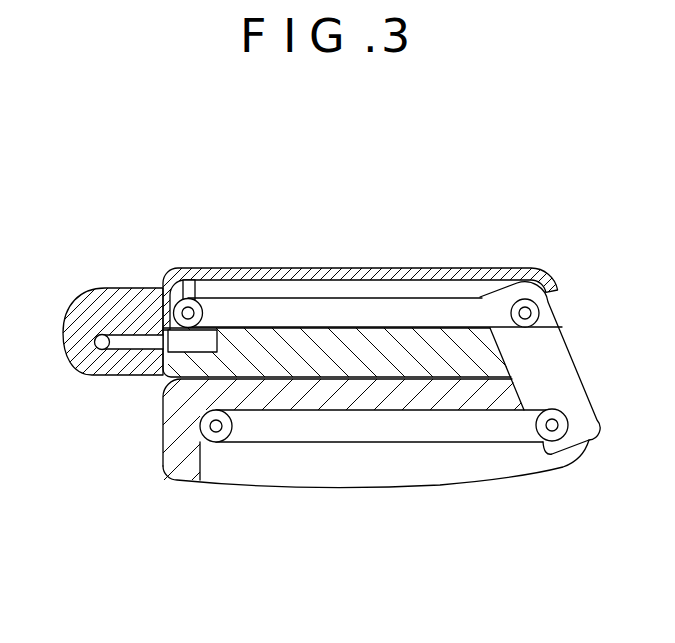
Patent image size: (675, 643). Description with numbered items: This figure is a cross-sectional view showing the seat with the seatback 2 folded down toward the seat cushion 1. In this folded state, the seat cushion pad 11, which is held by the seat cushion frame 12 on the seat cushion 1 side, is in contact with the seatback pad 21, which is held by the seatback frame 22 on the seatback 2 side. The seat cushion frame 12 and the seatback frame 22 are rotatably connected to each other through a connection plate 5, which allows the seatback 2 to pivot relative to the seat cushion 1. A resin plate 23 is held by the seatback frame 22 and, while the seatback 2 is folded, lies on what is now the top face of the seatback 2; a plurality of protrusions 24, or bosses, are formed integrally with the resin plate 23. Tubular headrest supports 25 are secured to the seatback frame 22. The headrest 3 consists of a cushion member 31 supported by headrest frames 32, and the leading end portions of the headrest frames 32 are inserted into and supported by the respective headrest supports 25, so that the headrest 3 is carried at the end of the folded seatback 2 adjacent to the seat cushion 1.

The seat cushion 1 is at (368, 488).
The seat cushion pad 11 is at (183, 461).
The seat cushion frame 12 is at (376, 480).
The seatback 2 is at (362, 266).
The seatback pad 21 is at (426, 346).
The seatback frame 22 is at (198, 202).
The resin plate 23 is at (331, 266).
The protrusion 24 is at (192, 290).
The headrest support 25 is at (203, 343).
The headrest 3 is at (90, 270).
The cushion member 31 is at (73, 310).
The headrest frame 32 is at (135, 328).
The connection plate 5 is at (570, 352).